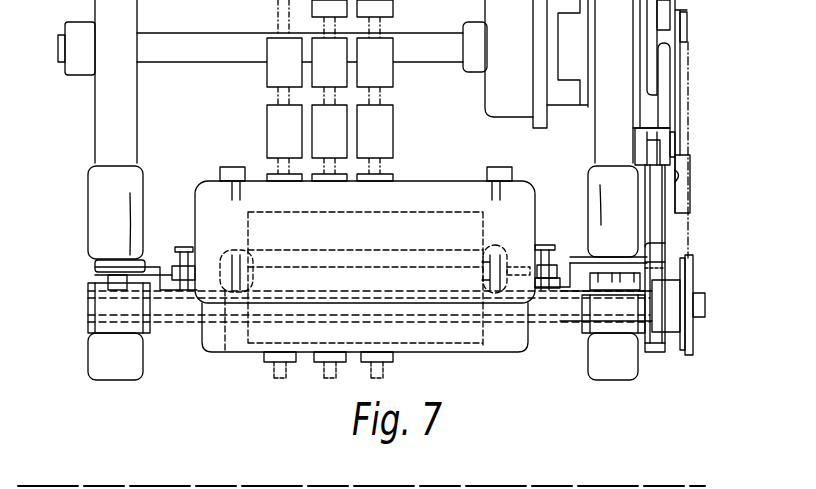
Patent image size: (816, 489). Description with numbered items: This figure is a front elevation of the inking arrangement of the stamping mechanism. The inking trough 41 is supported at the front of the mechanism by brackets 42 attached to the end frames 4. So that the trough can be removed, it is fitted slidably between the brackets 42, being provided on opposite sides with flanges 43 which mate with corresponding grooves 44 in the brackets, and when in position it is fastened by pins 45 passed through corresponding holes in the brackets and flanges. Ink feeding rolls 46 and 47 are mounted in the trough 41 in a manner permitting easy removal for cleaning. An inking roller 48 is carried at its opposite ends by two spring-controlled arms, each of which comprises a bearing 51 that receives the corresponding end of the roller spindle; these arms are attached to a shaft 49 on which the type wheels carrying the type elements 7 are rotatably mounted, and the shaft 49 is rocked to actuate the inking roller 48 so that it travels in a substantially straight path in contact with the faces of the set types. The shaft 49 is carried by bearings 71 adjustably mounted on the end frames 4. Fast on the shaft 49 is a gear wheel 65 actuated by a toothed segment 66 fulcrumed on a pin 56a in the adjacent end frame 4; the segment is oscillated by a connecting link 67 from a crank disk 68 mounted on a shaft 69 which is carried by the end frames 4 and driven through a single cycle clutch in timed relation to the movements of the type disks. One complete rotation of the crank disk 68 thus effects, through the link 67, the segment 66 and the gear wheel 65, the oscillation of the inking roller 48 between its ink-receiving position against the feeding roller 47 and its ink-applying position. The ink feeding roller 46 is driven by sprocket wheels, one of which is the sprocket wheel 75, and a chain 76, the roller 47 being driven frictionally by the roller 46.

The end frame 4 is at (122, 145).
The type element 7 is at (385, 140).
The shaft 69 is at (445, 45).
The crank disk 68 is at (648, 22).
The connecting link 67 is at (675, 78).
The pin 56a is at (676, 145).
The chain 76 is at (685, 163).
The toothed segment 66 is at (658, 252).
The gear wheel 65 is at (652, 345).
The sprocket wheel 75 is at (695, 353).
The pin 45 is at (186, 248).
The bracket 42 is at (164, 268).
The ink feeding roll 47 is at (345, 218).
The inking roller 48 is at (381, 261).
The bearing 51 is at (497, 247).
The ink feeding roll 46 is at (257, 341).
The inking trough 41 is at (422, 335).
The flange 43 is at (546, 289).
The groove 44 is at (572, 265).
The shaft 49 is at (175, 310).
The bearing 71 is at (106, 304).